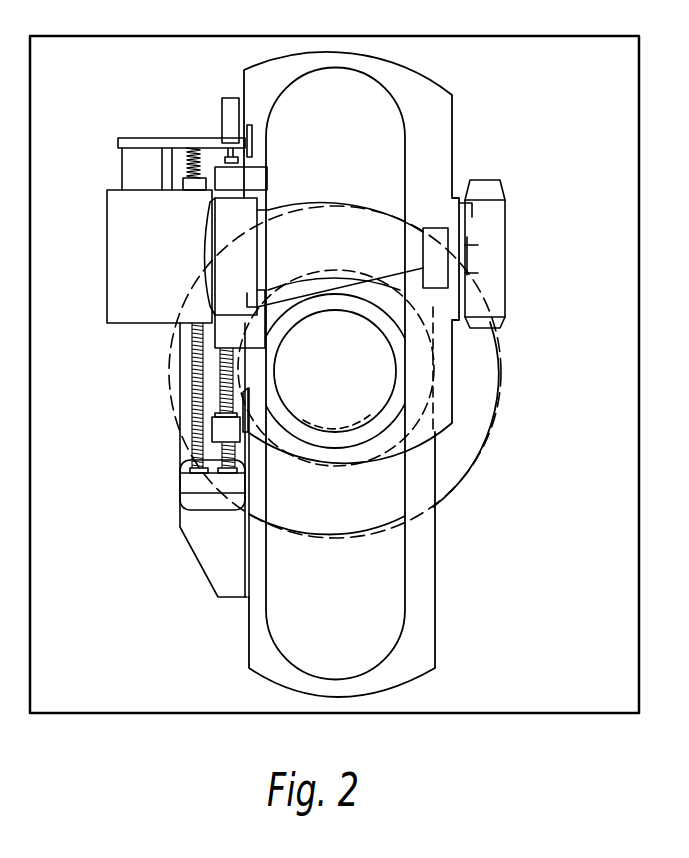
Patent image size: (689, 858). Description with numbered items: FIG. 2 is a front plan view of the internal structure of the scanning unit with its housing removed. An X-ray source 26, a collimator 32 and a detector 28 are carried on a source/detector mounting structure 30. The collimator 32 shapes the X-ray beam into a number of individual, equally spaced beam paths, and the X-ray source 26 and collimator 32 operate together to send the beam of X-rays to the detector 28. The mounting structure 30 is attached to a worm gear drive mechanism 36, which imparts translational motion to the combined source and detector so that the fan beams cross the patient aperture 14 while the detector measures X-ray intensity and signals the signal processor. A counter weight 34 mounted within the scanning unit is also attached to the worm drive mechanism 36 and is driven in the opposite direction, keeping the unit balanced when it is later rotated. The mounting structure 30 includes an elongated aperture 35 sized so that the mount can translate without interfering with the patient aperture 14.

The patient aperture 14 is at (330, 312).
The X-ray source 26 is at (490, 262).
The detector 28 is at (243, 281).
The source/detector mounting structure 30 is at (453, 131).
The collimator 32 is at (430, 228).
The counter weight 34 is at (407, 580).
The elongated aperture 35 is at (405, 157).
The worm gear drive mechanism 36 is at (172, 438).